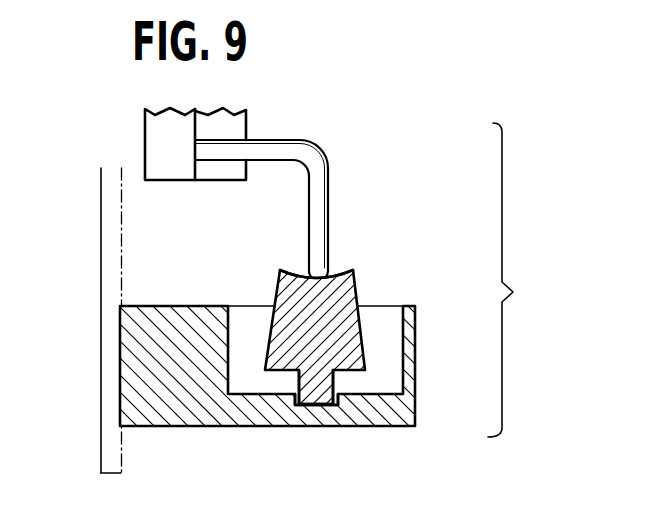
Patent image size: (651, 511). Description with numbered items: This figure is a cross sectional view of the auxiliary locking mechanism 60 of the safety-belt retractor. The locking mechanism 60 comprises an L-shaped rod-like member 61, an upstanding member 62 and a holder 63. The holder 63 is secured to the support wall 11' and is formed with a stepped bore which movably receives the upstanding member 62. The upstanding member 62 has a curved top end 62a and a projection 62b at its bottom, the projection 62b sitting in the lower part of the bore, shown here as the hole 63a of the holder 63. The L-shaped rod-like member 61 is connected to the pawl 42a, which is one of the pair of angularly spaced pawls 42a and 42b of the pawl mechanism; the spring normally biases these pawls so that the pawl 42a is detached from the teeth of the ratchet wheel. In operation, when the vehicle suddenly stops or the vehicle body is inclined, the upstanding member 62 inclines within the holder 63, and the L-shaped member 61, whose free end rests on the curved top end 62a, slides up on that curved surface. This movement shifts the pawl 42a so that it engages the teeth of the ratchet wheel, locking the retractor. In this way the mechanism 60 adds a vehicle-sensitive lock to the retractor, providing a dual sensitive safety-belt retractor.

The support wall 11' is at (77, 320).
The pawl 42a is at (172, 168).
The pawl 42b is at (237, 127).
The locking mechanism 60 is at (547, 304).
The L-shaped rod-like member 61 is at (317, 182).
The upstanding member 62 is at (335, 290).
The curved top end 62a is at (333, 272).
The projection 62b is at (327, 378).
The holder 63 is at (418, 335).
The hole in base block 63a is at (297, 397).